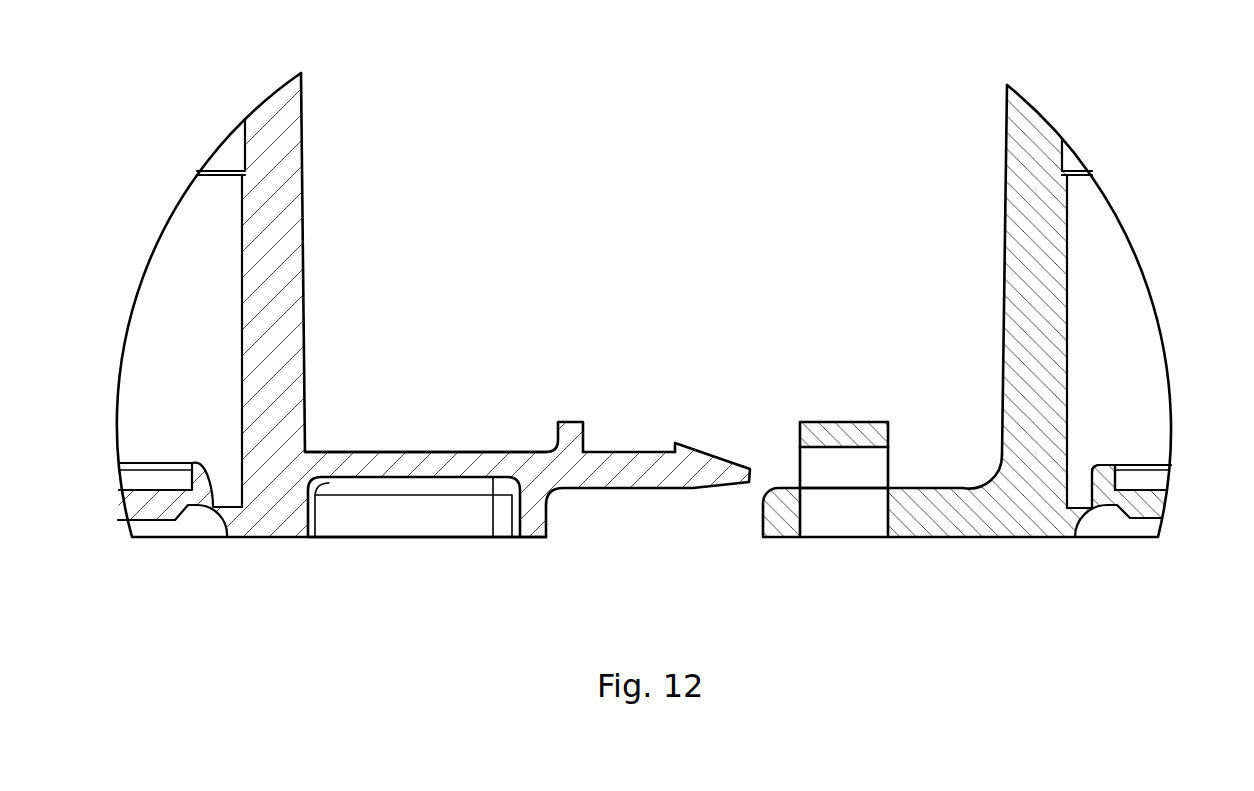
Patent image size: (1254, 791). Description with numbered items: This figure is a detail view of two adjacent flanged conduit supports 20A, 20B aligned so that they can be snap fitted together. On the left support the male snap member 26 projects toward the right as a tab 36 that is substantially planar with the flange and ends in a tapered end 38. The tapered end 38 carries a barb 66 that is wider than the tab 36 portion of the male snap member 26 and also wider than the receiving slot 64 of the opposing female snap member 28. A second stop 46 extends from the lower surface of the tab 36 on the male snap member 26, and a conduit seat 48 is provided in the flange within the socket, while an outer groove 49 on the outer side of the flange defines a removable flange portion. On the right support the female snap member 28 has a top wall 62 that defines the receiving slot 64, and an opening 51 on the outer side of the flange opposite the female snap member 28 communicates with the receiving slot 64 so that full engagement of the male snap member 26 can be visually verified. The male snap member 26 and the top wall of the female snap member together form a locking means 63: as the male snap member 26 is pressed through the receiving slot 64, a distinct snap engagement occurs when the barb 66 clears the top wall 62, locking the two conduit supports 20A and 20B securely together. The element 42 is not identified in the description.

The conduit support 20A is at (433, 313).
The conduit support 20B is at (994, 311).
The male snap member 26 is at (428, 452).
The female snap member 28 is at (882, 365).
The tab 36 is at (630, 452).
The tapered end 38 is at (720, 482).
The rib 42 is at (572, 420).
The second stop 46 is at (531, 537).
The conduit seat 48 is at (1080, 497).
The outer groove 49 is at (1117, 512).
The opening 51 is at (848, 520).
The top wall 62 is at (845, 422).
The locking means 63 is at (778, 394).
The receiving slot 64 is at (873, 467).
The barb 66 is at (677, 443).